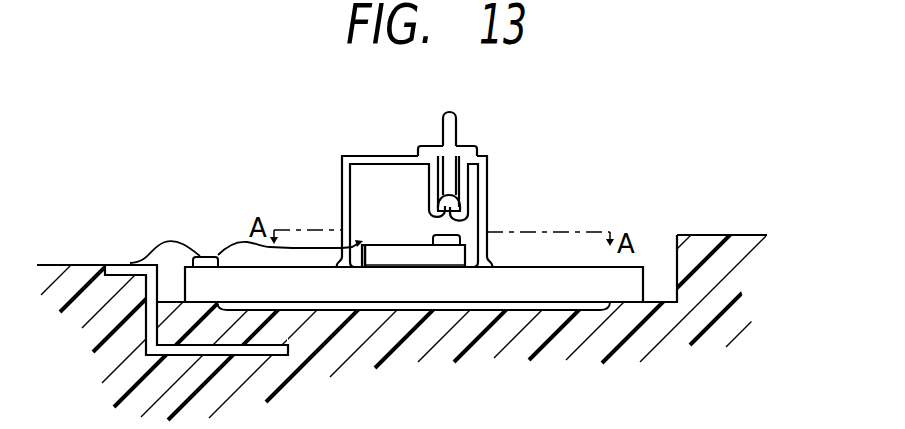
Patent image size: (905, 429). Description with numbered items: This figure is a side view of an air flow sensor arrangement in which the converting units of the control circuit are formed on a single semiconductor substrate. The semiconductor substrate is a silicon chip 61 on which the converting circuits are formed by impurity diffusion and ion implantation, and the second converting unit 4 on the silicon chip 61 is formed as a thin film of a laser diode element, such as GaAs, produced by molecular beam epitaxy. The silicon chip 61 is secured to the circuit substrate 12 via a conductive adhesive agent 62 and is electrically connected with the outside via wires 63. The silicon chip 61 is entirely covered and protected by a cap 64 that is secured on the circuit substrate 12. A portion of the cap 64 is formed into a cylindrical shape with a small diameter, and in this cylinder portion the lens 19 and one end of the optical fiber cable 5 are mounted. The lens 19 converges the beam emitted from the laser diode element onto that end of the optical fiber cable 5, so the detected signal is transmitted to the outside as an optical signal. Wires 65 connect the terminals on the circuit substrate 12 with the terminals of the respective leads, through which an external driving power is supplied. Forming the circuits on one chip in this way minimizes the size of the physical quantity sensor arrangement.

The second converting unit 4 is at (458, 242).
The optical fiber cable 5 is at (453, 127).
The circuit substrate 12 is at (312, 286).
The lens 19 is at (452, 205).
The silicon chip 61 is at (387, 253).
The conductive adhesive agent 62 is at (453, 263).
The wires 63 is at (292, 248).
The cap 64 is at (368, 156).
The wires 65 is at (199, 255).